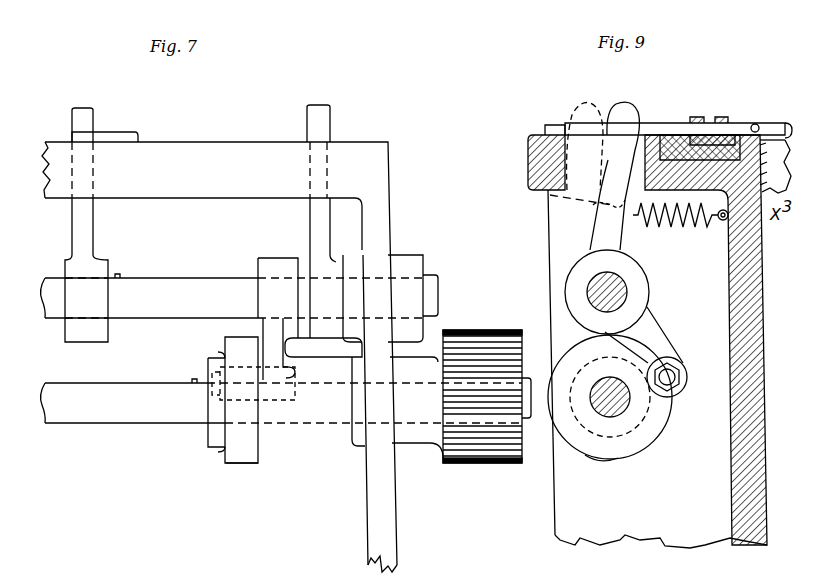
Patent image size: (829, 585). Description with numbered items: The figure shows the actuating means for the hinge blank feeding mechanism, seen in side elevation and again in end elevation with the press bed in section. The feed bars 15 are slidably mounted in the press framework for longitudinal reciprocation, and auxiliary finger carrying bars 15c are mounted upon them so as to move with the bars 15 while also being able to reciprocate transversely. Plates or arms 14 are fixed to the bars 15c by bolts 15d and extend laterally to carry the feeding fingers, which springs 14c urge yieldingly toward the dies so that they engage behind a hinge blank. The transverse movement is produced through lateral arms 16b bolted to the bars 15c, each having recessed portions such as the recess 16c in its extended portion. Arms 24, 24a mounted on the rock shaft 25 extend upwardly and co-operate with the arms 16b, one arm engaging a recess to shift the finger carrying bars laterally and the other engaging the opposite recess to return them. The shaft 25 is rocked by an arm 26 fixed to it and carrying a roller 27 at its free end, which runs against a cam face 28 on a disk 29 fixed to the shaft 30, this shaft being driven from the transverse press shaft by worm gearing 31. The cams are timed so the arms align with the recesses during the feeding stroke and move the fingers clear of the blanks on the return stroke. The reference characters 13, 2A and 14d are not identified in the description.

In FIG. 7, the frame / bracket 13 is at (352, 140).
In FIG. 9, the frame / bracket 13 is at (536, 134).
In FIG. 7, the arms 16b is at (128, 132).
In FIG. 9, the arms 16b is at (552, 125).
In FIG. 9, the recessed portion 16c is at (598, 135).
In FIG. 7, the post 2A is at (90, 236).
In FIG. 9, the arm 24 is at (600, 205).
In FIG. 7, the arm 24a is at (308, 234).
In FIG. 7, the rock shaft 25 is at (239, 298).
In FIG. 9, the rock shaft 25 is at (628, 290).
In FIG. 7, the arm 26 is at (285, 356).
In FIG. 9, the arm 26 is at (655, 340).
In FIG. 7, the roller 27 is at (243, 400).
In FIG. 9, the roller 27 is at (687, 377).
In FIG. 7, the cam face 28 is at (246, 450).
In FIG. 9, the cam face 28 is at (600, 461).
In FIG. 7, the disk 29 is at (260, 436).
In FIG. 9, the disk 29 is at (625, 448).
In FIG. 7, the shaft 30 is at (286, 400).
In FIG. 7, the worm gearing 31 is at (480, 470).
In FIG. 9, the bars 15 is at (670, 135).
In FIG. 9, the auxiliary bars 15c is at (722, 117).
In FIG. 9, the bolts 15d is at (697, 117).
In FIG. 9, the plates or arms 14 is at (708, 135).
In FIG. 9, the springs 14c is at (755, 124).
In FIG. 9, the stop 14d is at (784, 118).